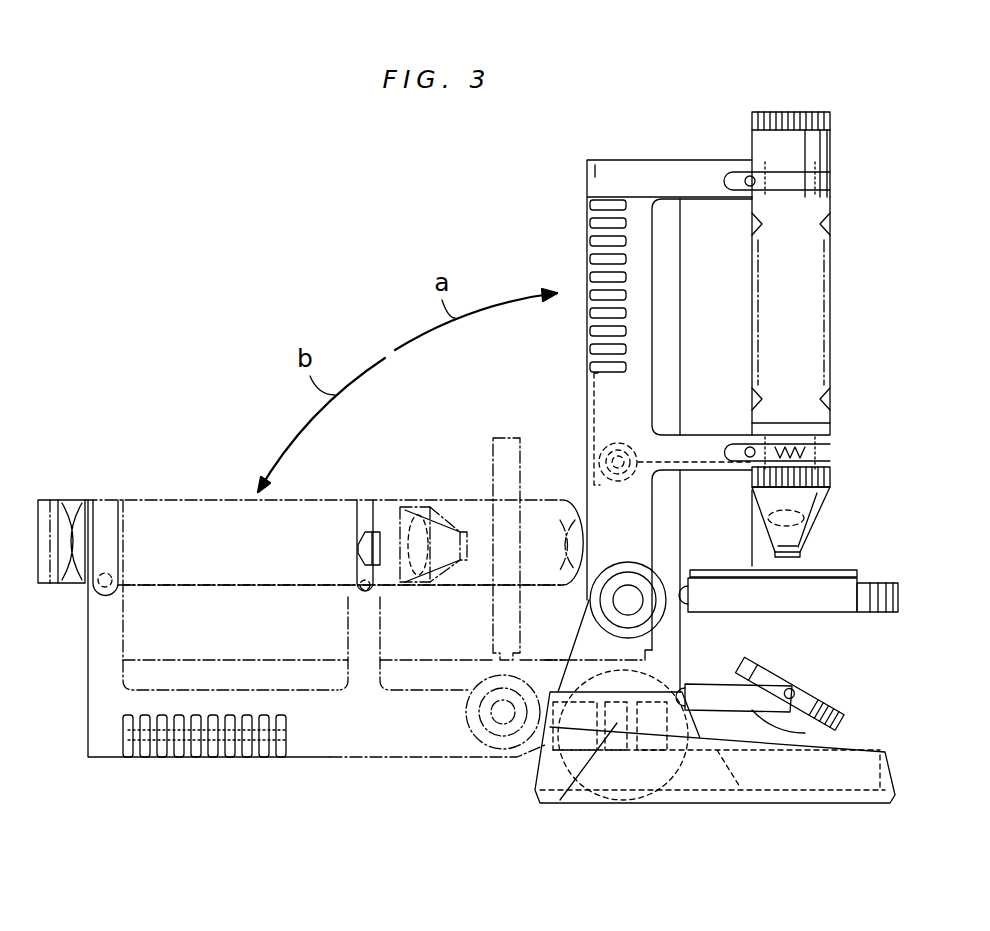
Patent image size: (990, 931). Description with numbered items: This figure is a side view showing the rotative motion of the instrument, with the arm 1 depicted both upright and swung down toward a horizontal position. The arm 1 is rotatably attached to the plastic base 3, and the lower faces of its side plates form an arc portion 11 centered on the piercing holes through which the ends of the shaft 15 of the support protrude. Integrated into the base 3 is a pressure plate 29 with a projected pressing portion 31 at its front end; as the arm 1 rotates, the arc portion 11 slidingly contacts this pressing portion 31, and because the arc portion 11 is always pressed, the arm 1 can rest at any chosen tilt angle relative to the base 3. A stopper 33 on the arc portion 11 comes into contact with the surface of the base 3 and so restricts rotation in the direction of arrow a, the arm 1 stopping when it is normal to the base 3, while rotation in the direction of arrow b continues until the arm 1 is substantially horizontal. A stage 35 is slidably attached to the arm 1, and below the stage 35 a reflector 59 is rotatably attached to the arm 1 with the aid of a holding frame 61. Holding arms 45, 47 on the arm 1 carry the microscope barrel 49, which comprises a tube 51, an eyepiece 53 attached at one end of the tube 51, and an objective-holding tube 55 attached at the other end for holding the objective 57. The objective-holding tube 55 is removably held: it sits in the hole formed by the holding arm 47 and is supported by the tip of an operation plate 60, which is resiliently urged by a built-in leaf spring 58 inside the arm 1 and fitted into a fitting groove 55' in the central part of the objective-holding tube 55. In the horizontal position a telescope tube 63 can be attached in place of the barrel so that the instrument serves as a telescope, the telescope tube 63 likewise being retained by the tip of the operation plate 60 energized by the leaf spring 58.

The arm 1 is at (585, 415).
The base 3 is at (860, 805).
The arc portion 11 is at (653, 787).
The shaft 15 is at (560, 800).
The pressure plate 29 is at (677, 797).
The pressing portion 31 is at (615, 797).
The stopper 33 is at (650, 657).
The stage 35 is at (880, 585).
The holding arm 45 is at (695, 185).
The holding arm 47 is at (712, 445).
The microscope barrel 49 is at (745, 227).
The tube 51 is at (835, 290).
The eyepiece 53 is at (800, 112).
The objective-holding tube 55 is at (645, 557).
The fitting groove 55' is at (638, 495).
The objective 57 is at (810, 530).
The leaf spring 58 is at (592, 395).
The reflector 59 is at (760, 690).
The operation plate 60 is at (714, 462).
The holding frame 61 is at (805, 720).
The telescope tube 63 is at (458, 500).